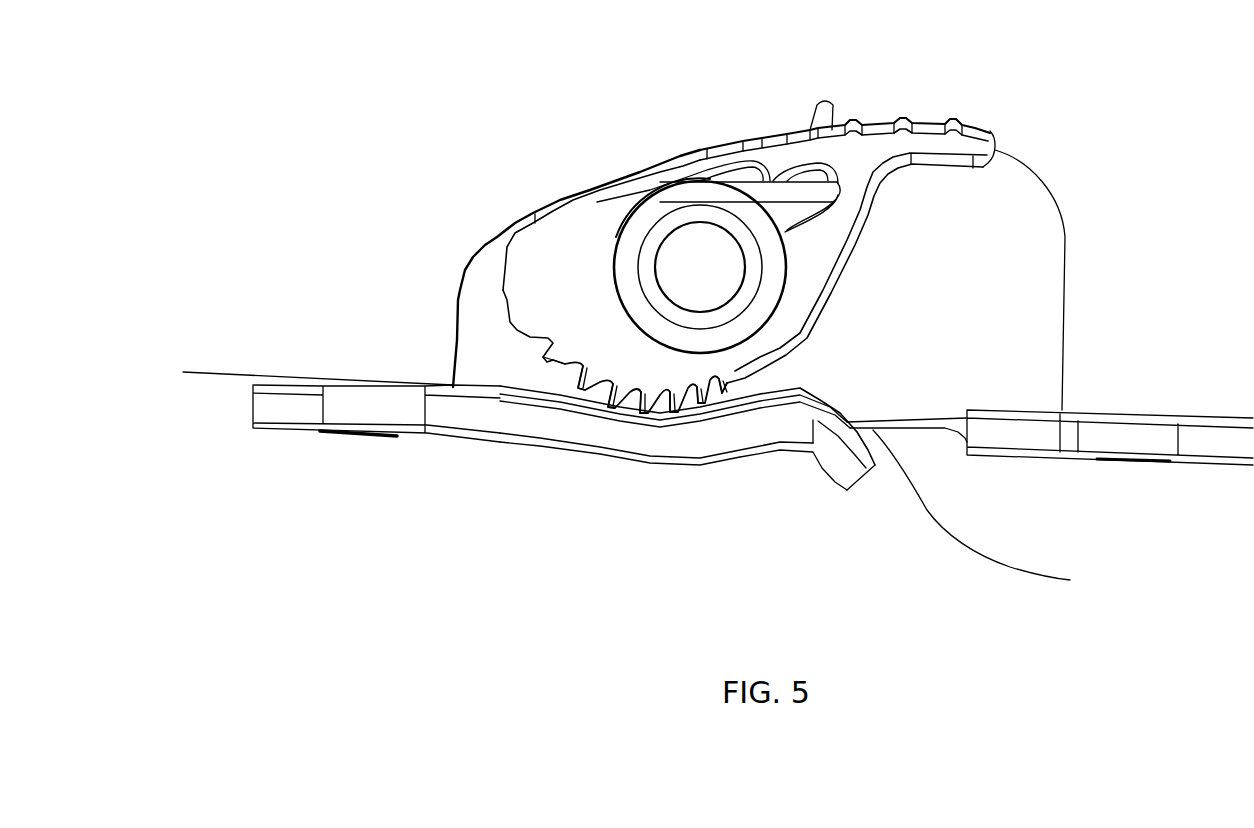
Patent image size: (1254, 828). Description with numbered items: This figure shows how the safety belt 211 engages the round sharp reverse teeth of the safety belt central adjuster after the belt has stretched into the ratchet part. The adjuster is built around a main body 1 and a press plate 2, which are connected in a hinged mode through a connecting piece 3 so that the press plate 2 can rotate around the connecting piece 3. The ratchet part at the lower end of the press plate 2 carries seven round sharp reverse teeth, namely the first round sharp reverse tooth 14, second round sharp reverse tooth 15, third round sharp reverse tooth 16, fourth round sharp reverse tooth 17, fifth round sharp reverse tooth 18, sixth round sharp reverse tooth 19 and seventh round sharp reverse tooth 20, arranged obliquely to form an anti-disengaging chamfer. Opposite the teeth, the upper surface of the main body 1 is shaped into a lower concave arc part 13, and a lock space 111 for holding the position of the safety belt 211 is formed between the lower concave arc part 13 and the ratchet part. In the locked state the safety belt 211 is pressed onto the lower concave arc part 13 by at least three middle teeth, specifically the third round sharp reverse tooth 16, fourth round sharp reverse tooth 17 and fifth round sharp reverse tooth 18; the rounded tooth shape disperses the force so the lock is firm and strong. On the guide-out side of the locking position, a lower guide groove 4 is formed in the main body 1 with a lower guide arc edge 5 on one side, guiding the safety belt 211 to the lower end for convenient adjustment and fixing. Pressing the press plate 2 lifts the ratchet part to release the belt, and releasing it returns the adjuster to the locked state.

The main body 1 is at (292, 417).
The press plate 2 is at (587, 230).
The connecting piece 3 is at (712, 262).
The lower guide groove 4 is at (893, 442).
The lower guide arc edge 5 is at (838, 450).
The lower concave arc part 13 is at (645, 400).
The first round sharp reverse tooth 14 is at (720, 385).
The second round sharp reverse tooth 15 is at (703, 397).
The third round sharp reverse tooth 16 is at (660, 398).
The fourth round sharp reverse tooth 17 is at (642, 405).
The fifth round sharp reverse tooth 18 is at (622, 400).
The sixth round sharp reverse tooth 19 is at (600, 392).
The seventh round sharp reverse tooth 20 is at (553, 360).
The lock space 111 is at (480, 305).
The safety belt 211 is at (900, 473).